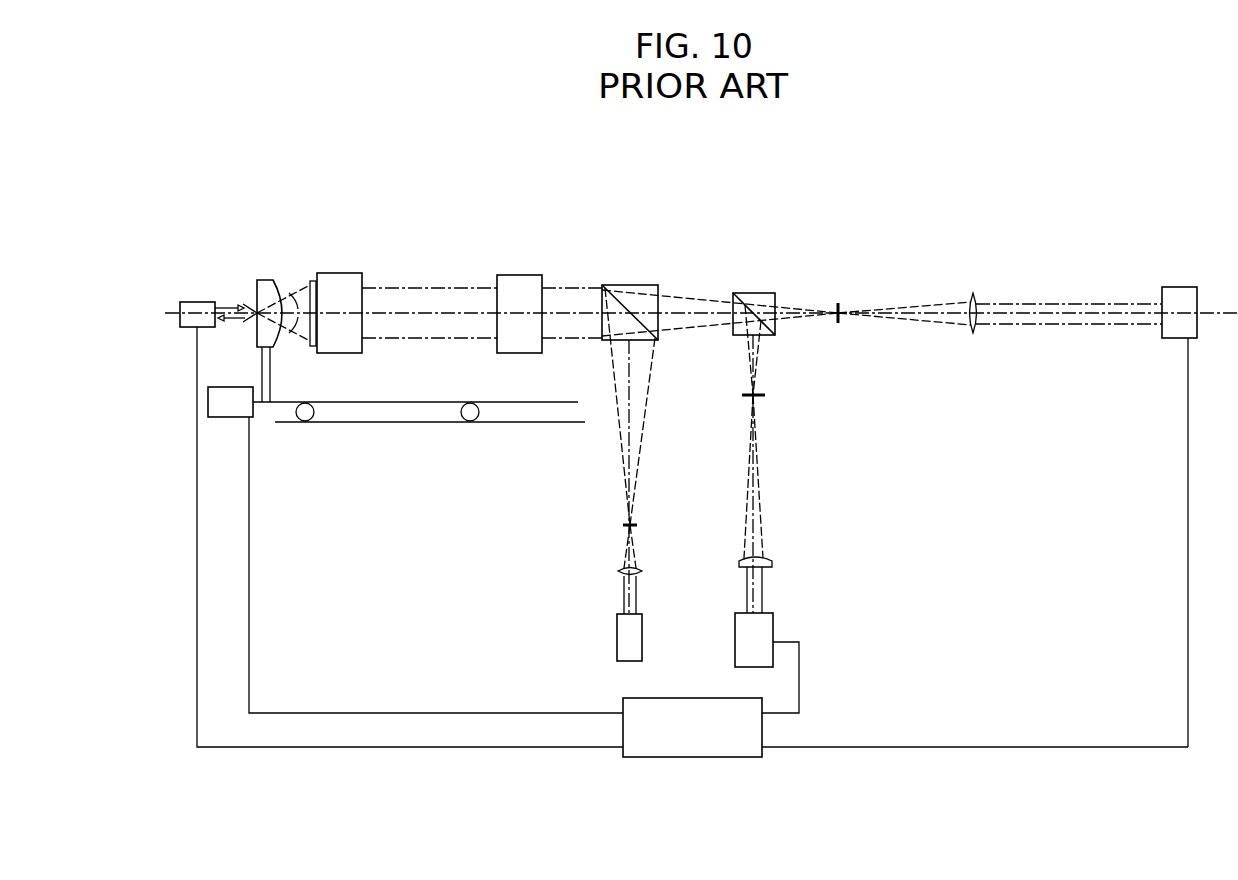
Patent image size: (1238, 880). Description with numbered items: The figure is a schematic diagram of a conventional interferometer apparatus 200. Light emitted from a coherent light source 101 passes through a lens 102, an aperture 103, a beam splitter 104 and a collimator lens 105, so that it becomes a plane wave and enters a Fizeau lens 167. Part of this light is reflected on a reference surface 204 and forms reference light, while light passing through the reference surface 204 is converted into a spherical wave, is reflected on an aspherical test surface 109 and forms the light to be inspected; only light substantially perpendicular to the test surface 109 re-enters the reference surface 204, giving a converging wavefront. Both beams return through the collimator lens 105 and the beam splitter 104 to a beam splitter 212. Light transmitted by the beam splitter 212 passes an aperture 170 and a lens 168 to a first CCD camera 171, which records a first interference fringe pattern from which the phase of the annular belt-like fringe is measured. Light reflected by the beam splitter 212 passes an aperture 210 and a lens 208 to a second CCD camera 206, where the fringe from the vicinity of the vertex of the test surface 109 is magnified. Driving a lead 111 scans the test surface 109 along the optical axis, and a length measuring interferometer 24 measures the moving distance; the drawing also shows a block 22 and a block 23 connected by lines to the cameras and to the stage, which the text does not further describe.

The prior art laser processing / measurement apparatus 200 is at (503, 157).
The length measuring interferometer 24 is at (203, 304).
The aspherical test surface 109 is at (270, 280).
The reference surface 204 is at (313, 281).
The Fizeau lens 167 is at (342, 285).
The collimator lens 105 is at (519, 285).
The beam splitter 104 is at (633, 292).
The beam splitter 212 is at (761, 297).
The aperture 170 is at (841, 303).
The lens 168 is at (975, 295).
The first CCD camera 171 is at (1180, 293).
The aperture 210 is at (766, 397).
The lens 208 is at (772, 562).
The second CCD camera 206 is at (773, 626).
The aperture 103 is at (623, 525).
The lens 102 is at (618, 571).
The coherent light source 101 is at (620, 636).
The controller 22 is at (686, 698).
The stage drive unit and control line 23 is at (466, 713).
The lead 111 is at (318, 422).